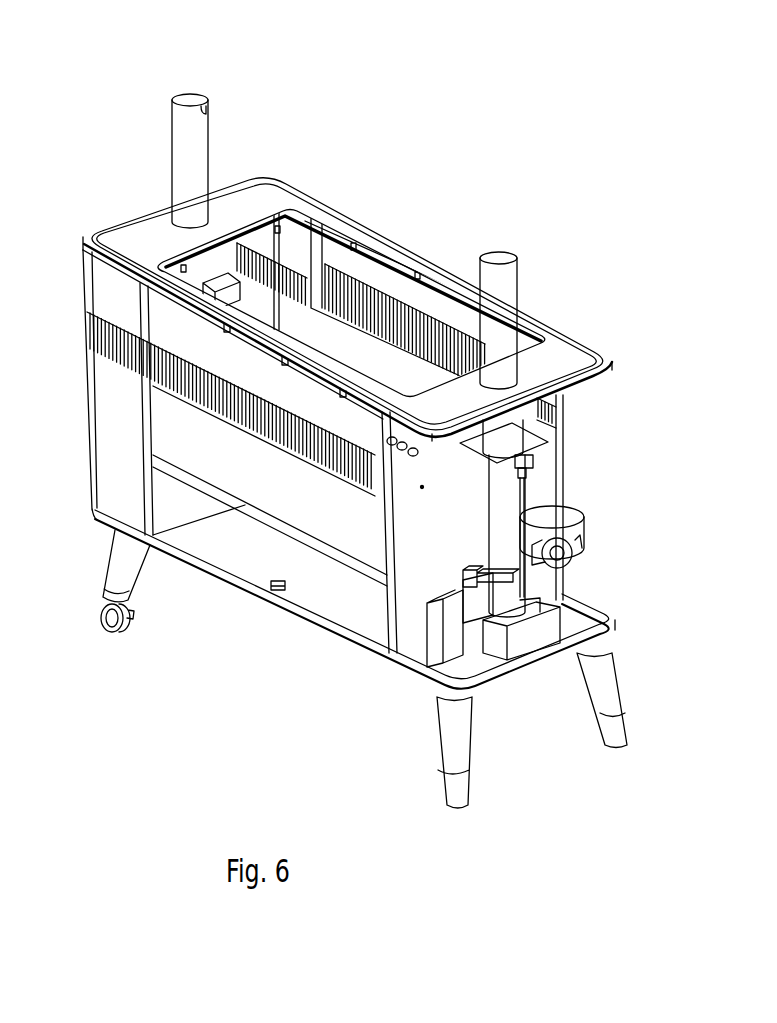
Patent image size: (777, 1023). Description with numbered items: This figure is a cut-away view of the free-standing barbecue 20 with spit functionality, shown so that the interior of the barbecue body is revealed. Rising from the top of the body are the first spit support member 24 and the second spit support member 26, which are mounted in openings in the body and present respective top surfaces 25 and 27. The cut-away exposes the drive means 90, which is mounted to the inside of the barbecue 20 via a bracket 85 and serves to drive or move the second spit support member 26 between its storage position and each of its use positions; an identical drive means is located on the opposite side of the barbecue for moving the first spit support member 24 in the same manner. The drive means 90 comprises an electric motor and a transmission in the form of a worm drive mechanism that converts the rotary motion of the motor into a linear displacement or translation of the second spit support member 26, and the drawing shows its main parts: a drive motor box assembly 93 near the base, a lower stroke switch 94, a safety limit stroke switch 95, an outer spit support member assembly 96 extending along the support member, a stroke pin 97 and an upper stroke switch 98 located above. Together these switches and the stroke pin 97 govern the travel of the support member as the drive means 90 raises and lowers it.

The barbecue 20 is at (400, 152).
The first spit support member 24 is at (180, 166).
The top surface 25 is at (190, 100).
The second spit support member 26 is at (513, 299).
The top surface 27 is at (500, 253).
The bracket 85 is at (424, 487).
The drive means 90 is at (436, 537).
The drive motor box assembly 93 is at (535, 641).
The lower stroke switch 94 is at (522, 592).
The safety limit stroke switch 95 is at (522, 578).
The outer spit support member assembly 96 is at (526, 498).
The stroke pin 97 is at (526, 474).
The upper stroke switch 98 is at (533, 461).